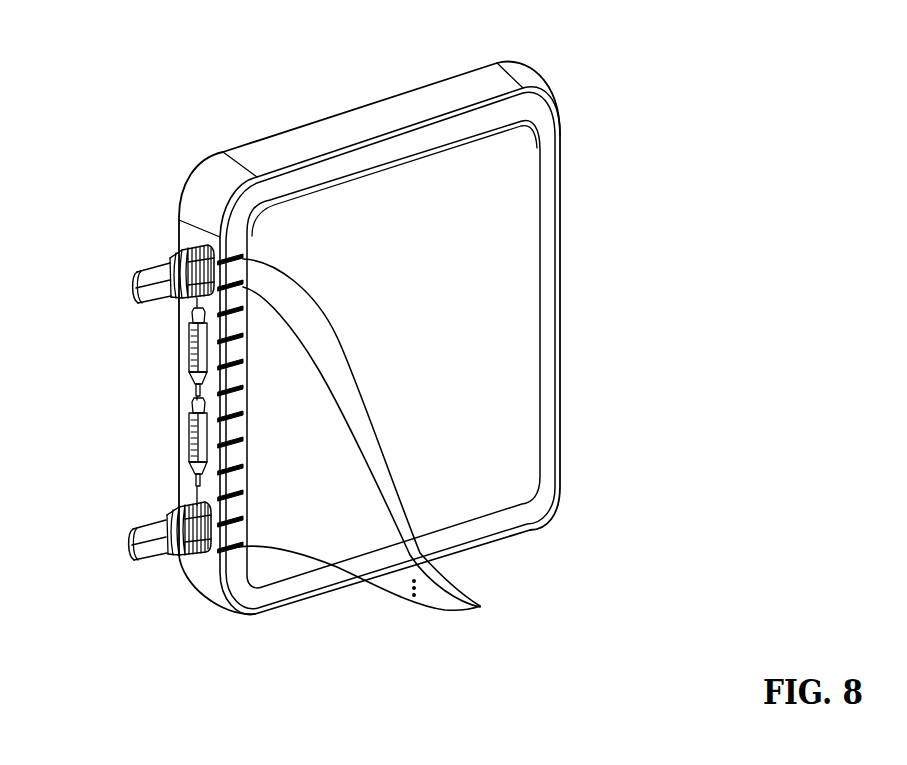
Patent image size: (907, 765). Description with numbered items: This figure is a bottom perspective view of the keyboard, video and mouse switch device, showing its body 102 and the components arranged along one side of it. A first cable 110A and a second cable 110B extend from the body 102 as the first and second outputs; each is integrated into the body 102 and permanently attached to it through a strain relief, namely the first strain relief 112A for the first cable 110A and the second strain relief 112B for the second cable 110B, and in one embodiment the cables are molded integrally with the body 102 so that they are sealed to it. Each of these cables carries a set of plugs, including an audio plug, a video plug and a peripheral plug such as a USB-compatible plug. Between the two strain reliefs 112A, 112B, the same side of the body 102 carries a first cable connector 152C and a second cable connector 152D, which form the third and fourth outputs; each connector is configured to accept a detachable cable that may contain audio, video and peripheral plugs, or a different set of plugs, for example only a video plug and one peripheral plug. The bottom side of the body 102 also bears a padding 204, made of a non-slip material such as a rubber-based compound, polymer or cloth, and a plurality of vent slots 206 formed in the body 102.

The body 102 is at (561, 383).
The padding 204 is at (561, 300).
The vent slots 206 is at (369, 437).
The first cable 110A is at (130, 281).
The second cable 110B is at (130, 536).
The first strain relief 112A is at (177, 300).
The second strain relief 112B is at (170, 553).
The first cable connector 152C is at (187, 360).
The second cable connector 152D is at (187, 433).